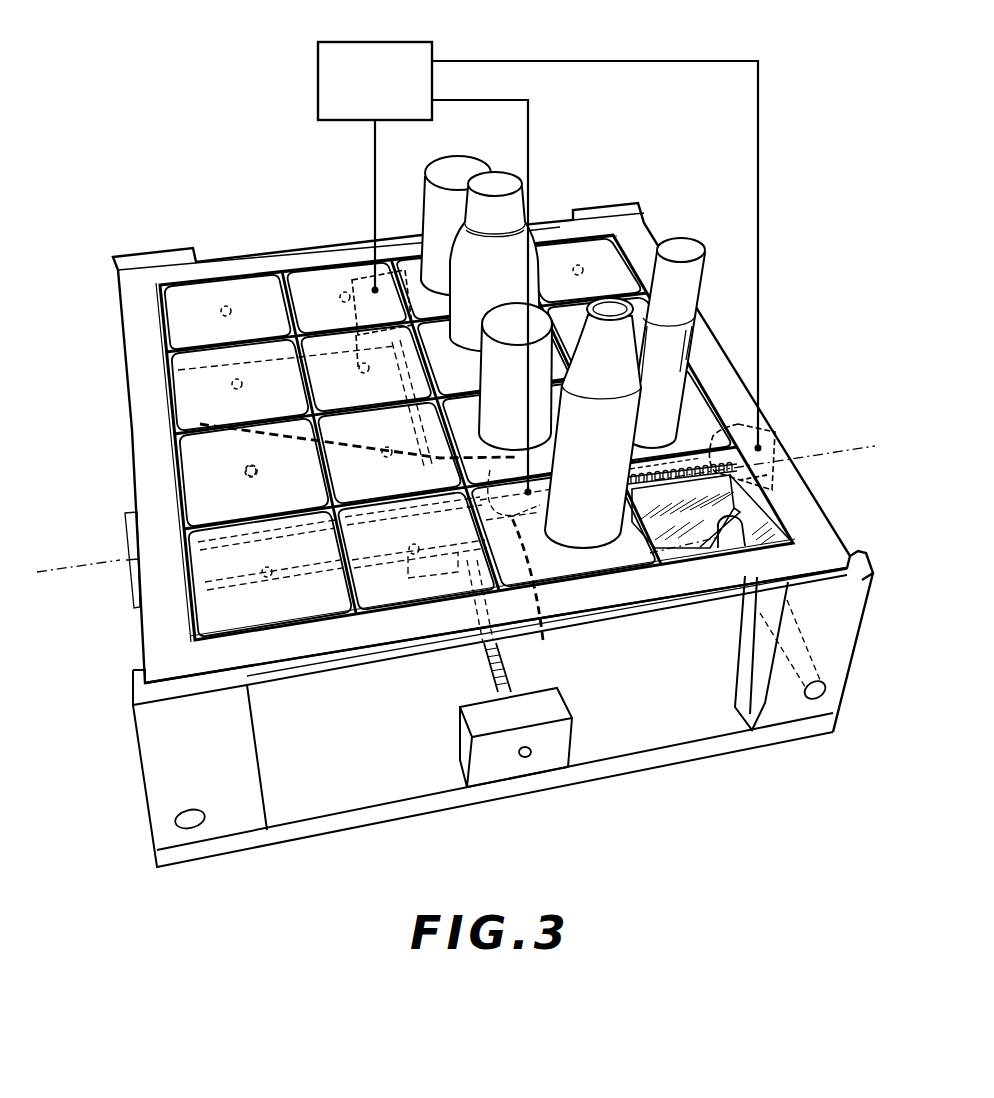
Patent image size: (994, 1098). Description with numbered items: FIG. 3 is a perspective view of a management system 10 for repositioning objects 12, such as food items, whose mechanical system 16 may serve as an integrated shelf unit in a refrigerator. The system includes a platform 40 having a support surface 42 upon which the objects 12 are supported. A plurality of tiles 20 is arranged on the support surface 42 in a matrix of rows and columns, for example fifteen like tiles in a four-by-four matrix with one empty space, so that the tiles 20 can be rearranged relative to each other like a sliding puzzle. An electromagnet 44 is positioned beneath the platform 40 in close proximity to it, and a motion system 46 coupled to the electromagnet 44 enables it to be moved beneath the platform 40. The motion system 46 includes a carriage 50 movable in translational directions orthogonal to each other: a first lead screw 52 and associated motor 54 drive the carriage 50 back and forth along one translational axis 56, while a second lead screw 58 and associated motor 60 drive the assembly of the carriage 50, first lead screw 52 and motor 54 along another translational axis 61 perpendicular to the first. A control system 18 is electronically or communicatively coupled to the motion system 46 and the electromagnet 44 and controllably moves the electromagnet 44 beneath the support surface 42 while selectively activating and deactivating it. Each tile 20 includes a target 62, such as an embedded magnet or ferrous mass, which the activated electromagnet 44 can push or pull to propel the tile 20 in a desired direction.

The management system 10 is at (818, 116).
The objects 12 is at (617, 415).
The mechanical system 16 is at (820, 346).
The control system 18 is at (397, 42).
The tiles 20 is at (597, 560).
The platform 40 is at (337, 662).
The support surface 42 is at (760, 522).
The electromagnet 44 is at (200, 424).
The motion system 46 is at (683, 723).
The carriage 50 is at (543, 640).
The first lead screw 52 is at (740, 427).
The motor 54 is at (767, 475).
The translational axis 56 is at (842, 447).
The second lead screw 58 is at (490, 667).
The motor 60 is at (354, 283).
The translational axis 61 is at (527, 757).
The target 62 is at (245, 468).